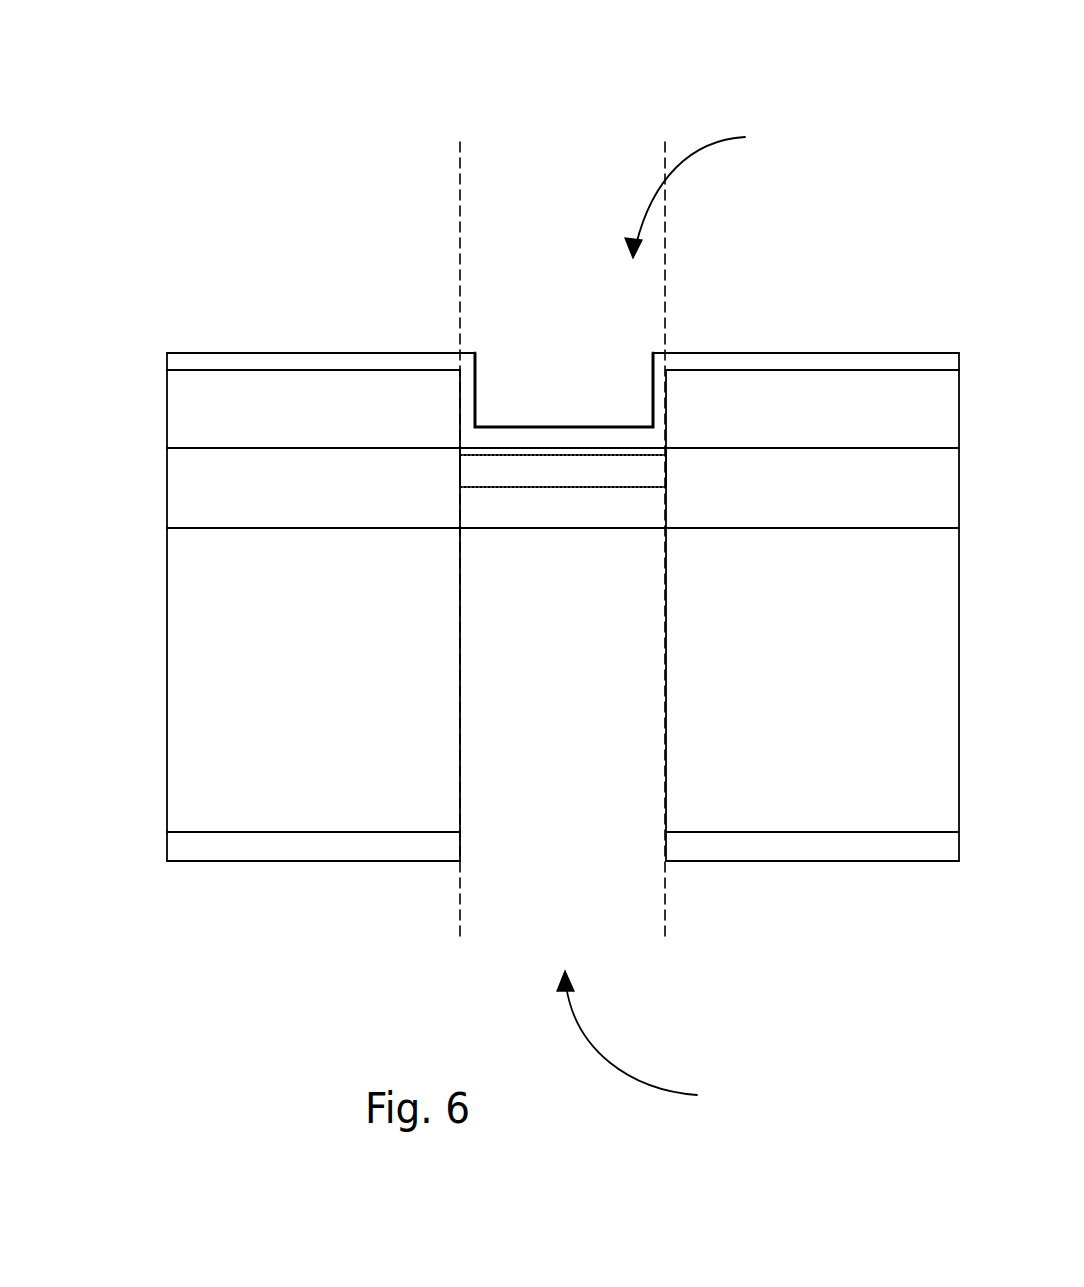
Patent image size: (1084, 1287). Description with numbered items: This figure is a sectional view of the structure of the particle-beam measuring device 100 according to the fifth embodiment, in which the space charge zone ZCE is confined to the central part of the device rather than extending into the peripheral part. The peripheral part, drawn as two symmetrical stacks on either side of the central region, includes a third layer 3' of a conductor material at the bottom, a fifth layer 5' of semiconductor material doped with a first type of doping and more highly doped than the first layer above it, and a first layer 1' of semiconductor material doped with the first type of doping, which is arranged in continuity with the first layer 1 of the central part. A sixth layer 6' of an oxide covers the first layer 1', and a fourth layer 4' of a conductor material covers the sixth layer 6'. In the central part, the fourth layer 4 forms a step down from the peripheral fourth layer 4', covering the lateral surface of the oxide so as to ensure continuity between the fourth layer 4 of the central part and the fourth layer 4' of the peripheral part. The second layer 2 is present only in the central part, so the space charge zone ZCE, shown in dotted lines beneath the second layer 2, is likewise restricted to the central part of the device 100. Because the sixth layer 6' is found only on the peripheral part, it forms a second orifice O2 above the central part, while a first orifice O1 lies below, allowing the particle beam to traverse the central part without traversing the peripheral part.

The device 100 is at (138, 137).
The fourth layer 4' is at (563, 261).
The sixth layer 6' is at (501, 394).
The first layer 1' is at (501, 467).
The fifth layer 5' is at (501, 688).
The third layer 3' is at (563, 951).
The fourth layer 4 is at (561, 290).
The first layer 1 is at (562, 540).
The second layer 2 is at (578, 450).
The space charge zone ZCE is at (650, 473).
The first orifice O1 is at (657, 1043).
The second orifice O2 is at (716, 189).